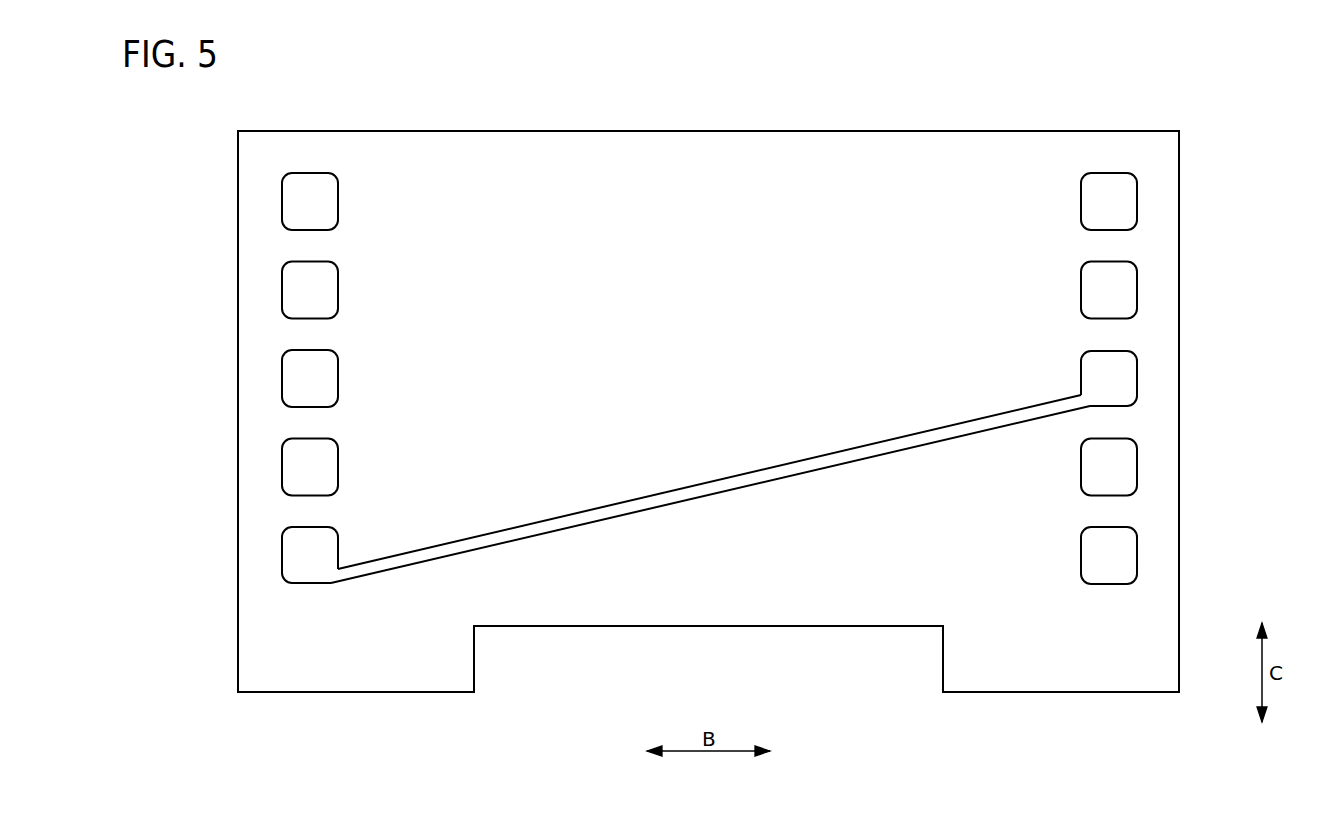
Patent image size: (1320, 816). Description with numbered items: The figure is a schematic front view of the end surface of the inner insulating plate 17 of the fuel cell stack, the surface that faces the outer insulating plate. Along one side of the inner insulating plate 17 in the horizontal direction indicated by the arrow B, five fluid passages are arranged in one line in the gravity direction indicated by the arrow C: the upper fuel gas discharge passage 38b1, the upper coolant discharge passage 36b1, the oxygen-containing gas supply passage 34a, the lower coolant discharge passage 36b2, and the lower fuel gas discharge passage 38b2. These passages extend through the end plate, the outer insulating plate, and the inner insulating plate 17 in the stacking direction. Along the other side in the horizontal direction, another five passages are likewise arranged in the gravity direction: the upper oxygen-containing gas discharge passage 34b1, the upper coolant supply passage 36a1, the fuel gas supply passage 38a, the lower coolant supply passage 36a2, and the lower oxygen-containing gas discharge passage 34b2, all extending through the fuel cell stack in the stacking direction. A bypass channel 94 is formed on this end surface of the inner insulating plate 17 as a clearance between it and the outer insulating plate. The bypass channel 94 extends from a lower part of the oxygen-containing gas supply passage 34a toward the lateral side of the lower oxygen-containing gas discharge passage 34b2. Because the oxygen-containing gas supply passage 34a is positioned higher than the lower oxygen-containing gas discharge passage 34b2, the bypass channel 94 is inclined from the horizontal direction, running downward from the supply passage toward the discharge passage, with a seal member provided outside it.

The inner insulating plate 17 is at (292, 92).
The upper oxygen-containing gas discharge passage 34b1 is at (298, 201).
The upper coolant supply passage 36a1 is at (298, 289).
The fuel gas supply passage 38a is at (298, 377).
The lower coolant supply passage 36a2 is at (298, 466).
The lower oxygen-containing gas discharge passage 34b2 is at (298, 554).
The upper fuel gas discharge passage 38b1 is at (1120, 201).
The upper coolant discharge passage 36b1 is at (1120, 290).
The oxygen-containing gas supply passage 34a is at (1120, 378).
The lower coolant discharge passage 36b2 is at (1120, 467).
The lower fuel gas discharge passage 38b2 is at (1120, 555).
The bypass channel 94 is at (794, 471).